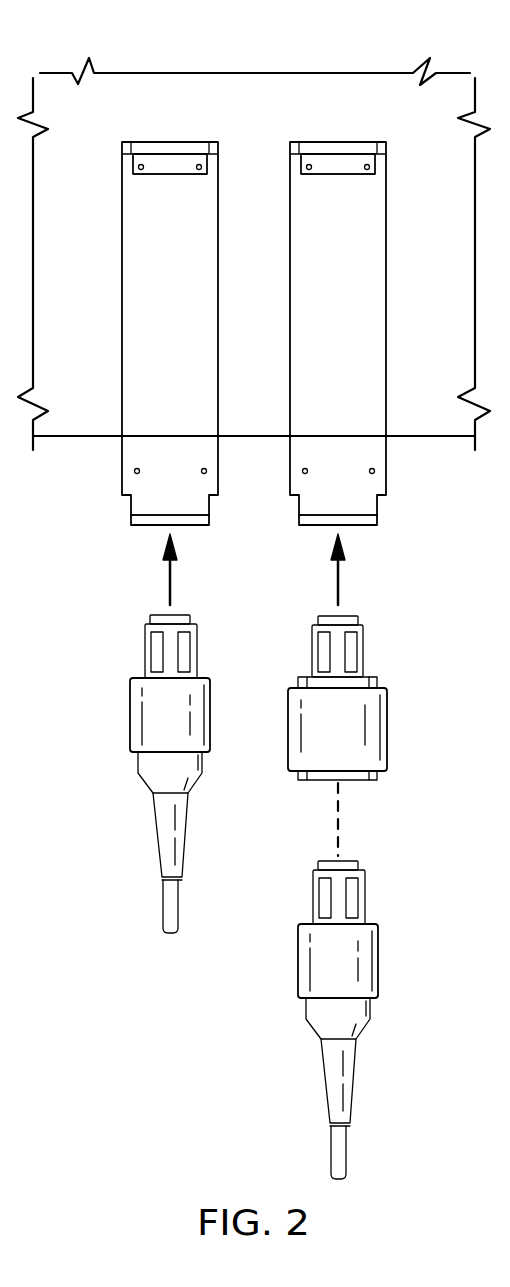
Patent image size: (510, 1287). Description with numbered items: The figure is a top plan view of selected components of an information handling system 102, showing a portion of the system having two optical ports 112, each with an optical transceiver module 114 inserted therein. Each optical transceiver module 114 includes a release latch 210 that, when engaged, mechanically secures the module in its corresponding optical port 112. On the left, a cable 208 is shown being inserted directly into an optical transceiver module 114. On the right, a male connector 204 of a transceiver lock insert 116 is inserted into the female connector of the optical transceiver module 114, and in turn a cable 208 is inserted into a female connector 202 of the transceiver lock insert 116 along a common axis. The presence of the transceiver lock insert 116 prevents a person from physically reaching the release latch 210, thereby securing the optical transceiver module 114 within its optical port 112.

The information handling system 102 is at (252, 80).
The optical port 112 is at (168, 147).
The optical transceiver module 114 is at (128, 238).
The transceiver lock insert 116 is at (388, 730).
The female connector 202 is at (366, 781).
The male connector 204 is at (365, 653).
The cable 208 is at (130, 712).
The release latch 210 is at (143, 527).